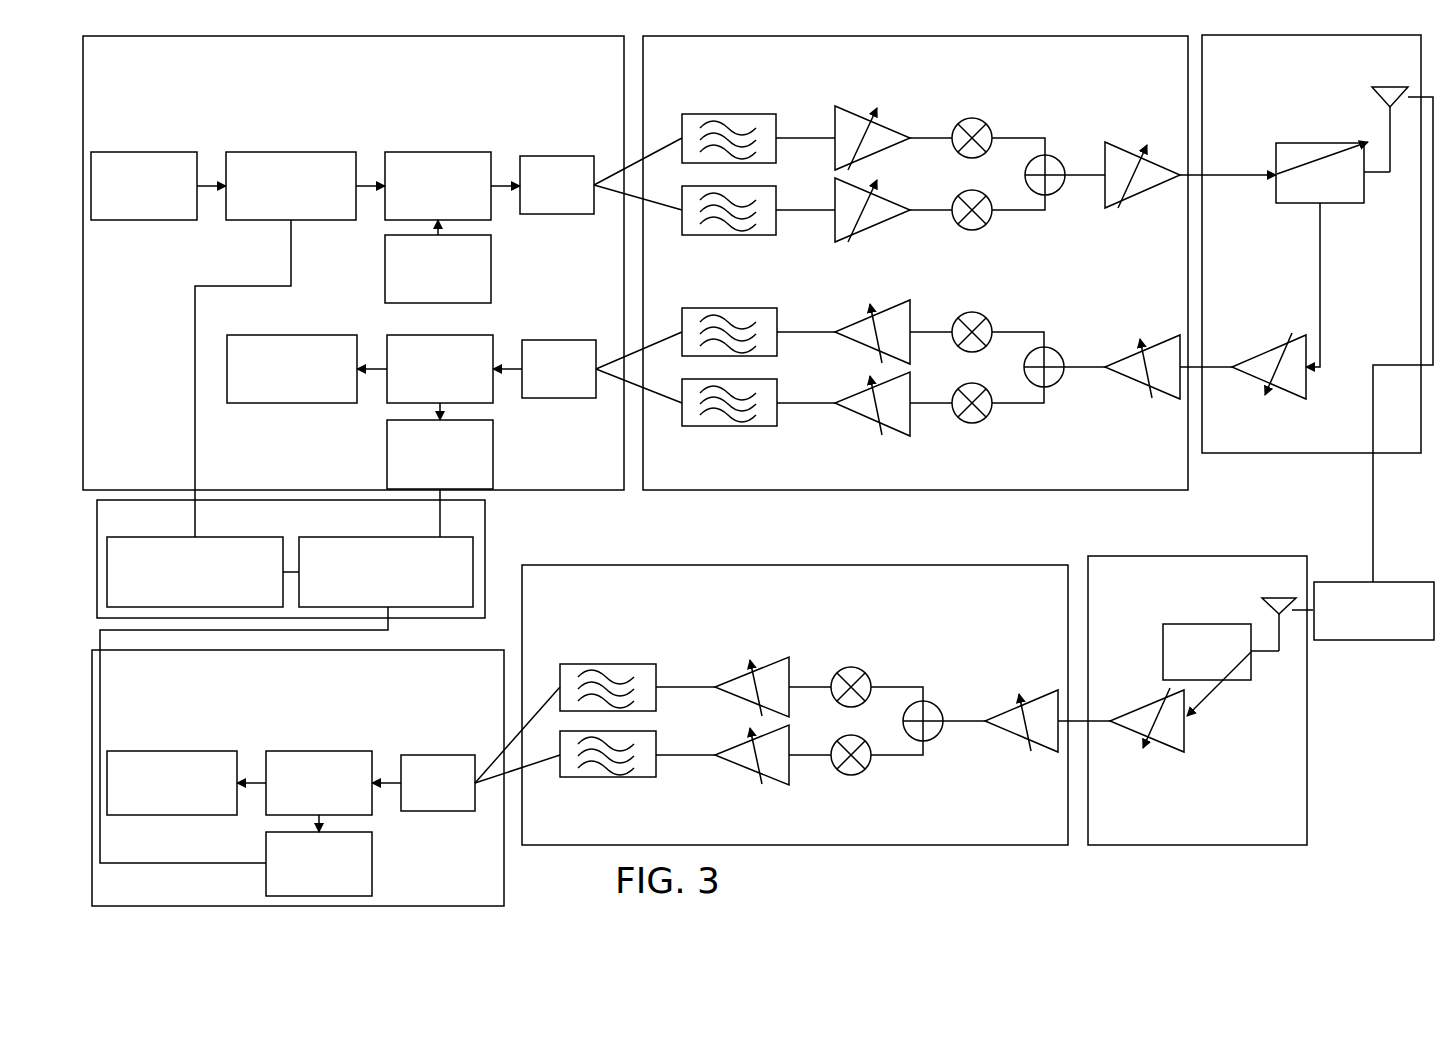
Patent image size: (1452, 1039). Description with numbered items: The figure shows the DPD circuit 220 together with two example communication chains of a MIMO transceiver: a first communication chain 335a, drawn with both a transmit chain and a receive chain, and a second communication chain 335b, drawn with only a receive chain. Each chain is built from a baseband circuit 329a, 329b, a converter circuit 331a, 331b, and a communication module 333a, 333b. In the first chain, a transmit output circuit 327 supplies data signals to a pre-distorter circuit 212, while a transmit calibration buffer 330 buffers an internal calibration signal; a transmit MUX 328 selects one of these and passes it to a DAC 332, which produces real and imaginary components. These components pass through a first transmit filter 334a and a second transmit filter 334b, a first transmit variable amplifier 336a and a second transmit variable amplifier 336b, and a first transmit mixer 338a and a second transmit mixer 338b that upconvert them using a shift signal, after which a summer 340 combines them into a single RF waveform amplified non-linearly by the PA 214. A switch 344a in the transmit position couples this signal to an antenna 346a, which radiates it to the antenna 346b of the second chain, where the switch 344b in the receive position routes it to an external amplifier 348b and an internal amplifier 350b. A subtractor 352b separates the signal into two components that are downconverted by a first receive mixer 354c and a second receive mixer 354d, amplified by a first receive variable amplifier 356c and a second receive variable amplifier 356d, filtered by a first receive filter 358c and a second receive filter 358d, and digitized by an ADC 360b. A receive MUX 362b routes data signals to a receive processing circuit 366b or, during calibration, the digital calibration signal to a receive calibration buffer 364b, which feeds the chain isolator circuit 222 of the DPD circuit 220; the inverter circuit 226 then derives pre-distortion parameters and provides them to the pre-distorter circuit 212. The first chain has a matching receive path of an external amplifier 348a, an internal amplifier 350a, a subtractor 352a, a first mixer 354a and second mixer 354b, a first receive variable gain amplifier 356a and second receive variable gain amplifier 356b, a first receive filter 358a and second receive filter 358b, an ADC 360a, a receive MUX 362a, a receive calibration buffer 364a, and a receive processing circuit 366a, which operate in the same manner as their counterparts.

The baseband circuit 329a is at (353, 263).
The baseband circuit 329b is at (298, 778).
The converter circuit 331a is at (915, 263).
The converter circuit 331b is at (795, 705).
The communication module 333a is at (1311, 244).
The communication module 333b is at (1197, 700).
The transmit output circuit 327 is at (147, 152).
The pre-distorter circuit 212 is at (293, 152).
The transmit MUX 328 is at (437, 152).
The digital to analog converter (DAC) 332 is at (548, 156).
The transmit calibration buffer 330 is at (491, 270).
The receive processing circuit 366a is at (292, 335).
The receive processing circuit 366b is at (172, 751).
The receive MUX 362a is at (432, 335).
The receive MUX 362b is at (318, 751).
The analog to digital converter (ADC) 360a is at (540, 340).
The analog to digital converter (ADC) 360b is at (420, 755).
The receive calibration buffer 364a is at (493, 445).
The receive calibration buffer 364b is at (372, 852).
The DPD circuit 220 is at (291, 559).
The inverter circuit 226 is at (195, 572).
The chain isolator circuit 222 is at (386, 572).
The first transmit filter 334a is at (727, 114).
The second transmit filter 334b is at (727, 235).
The first transmit variable amplifier 336a is at (887, 123).
The second transmit variable amplifier 336b is at (880, 228).
The first transmit mixer 338a is at (972, 118).
The second transmit mixer 338b is at (972, 230).
The summer 340 is at (1057, 190).
The PA 214 is at (1118, 142).
The antenna 346a is at (1372, 97).
The antenna 346b is at (1262, 606).
The switch 344a is at (1290, 203).
The switch 344b is at (1163, 635).
The external amplifier 348a is at (1290, 400).
The external amplifier 348b is at (1168, 745).
The internal amplifier 350a is at (1155, 398).
The internal amplifier 350b is at (1035, 752).
The subtractor 352a is at (1055, 385).
The subtractor 352b is at (935, 740).
The first mixer 354a is at (987, 313).
The second mixer 354b is at (975, 422).
The first receive mixer 354c is at (865, 672).
The second receive mixer 354d is at (855, 775).
The first receive variable gain amplifier 356a is at (890, 302).
The second receive variable gain amplifier 356b is at (895, 432).
The first receive variable amplifier 356c is at (775, 660).
The second receive variable amplifier 356d is at (776, 782).
The first receive filter 358a is at (727, 308).
The second receive filter 358b is at (727, 426).
The first receive filter 358c is at (606, 664).
The second receive filter 358d is at (606, 777).
The first communication chain 335a is at (1380, 468).
The second communication chain 335b is at (1327, 847).